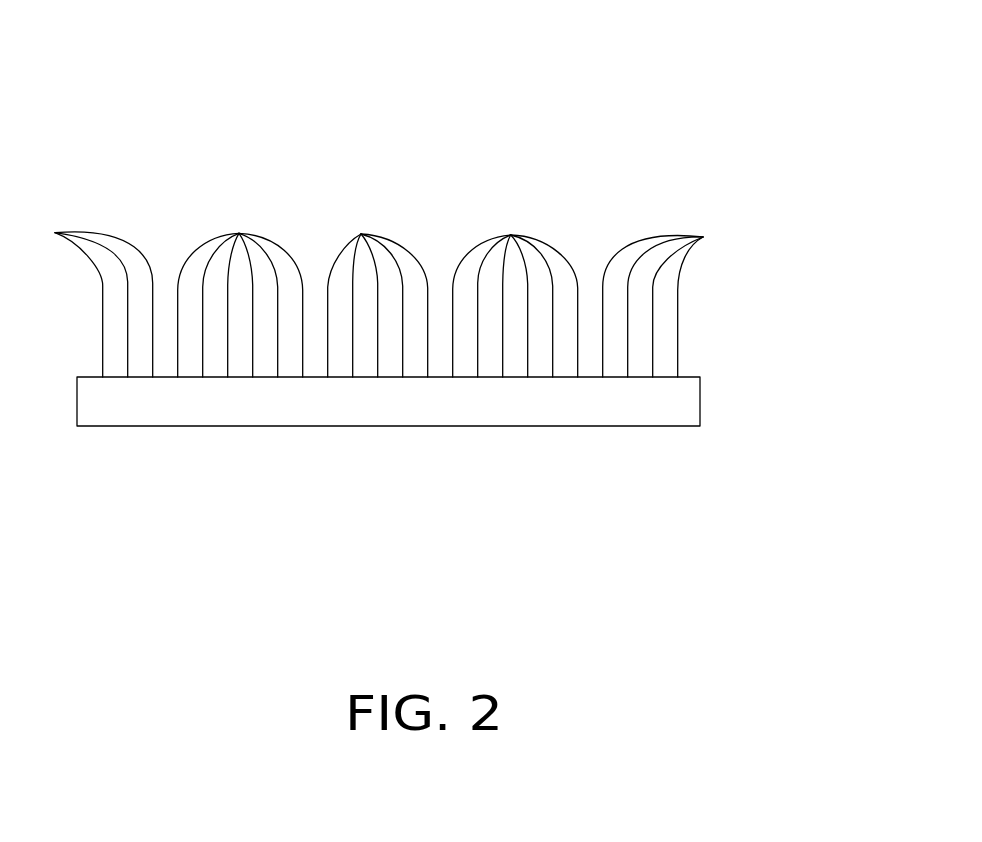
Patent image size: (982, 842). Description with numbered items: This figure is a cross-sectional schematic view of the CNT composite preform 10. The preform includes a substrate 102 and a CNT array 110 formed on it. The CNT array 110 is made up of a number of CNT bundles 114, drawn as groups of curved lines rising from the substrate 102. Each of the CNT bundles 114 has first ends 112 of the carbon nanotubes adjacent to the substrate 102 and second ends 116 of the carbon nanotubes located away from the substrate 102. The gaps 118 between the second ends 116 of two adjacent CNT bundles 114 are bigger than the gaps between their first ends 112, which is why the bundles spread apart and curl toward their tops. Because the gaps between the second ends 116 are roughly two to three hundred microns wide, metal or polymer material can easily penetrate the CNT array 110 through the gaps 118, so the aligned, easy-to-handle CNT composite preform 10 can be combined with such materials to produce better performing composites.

The CNT composite preform 10 is at (452, 63).
The substrate 102 is at (701, 399).
The CNT array 110 is at (810, 155).
The first ends 112 is at (677, 353).
The CNT bundles 114 is at (667, 320).
The second ends 116 is at (703, 237).
The gaps 118 is at (600, 252).